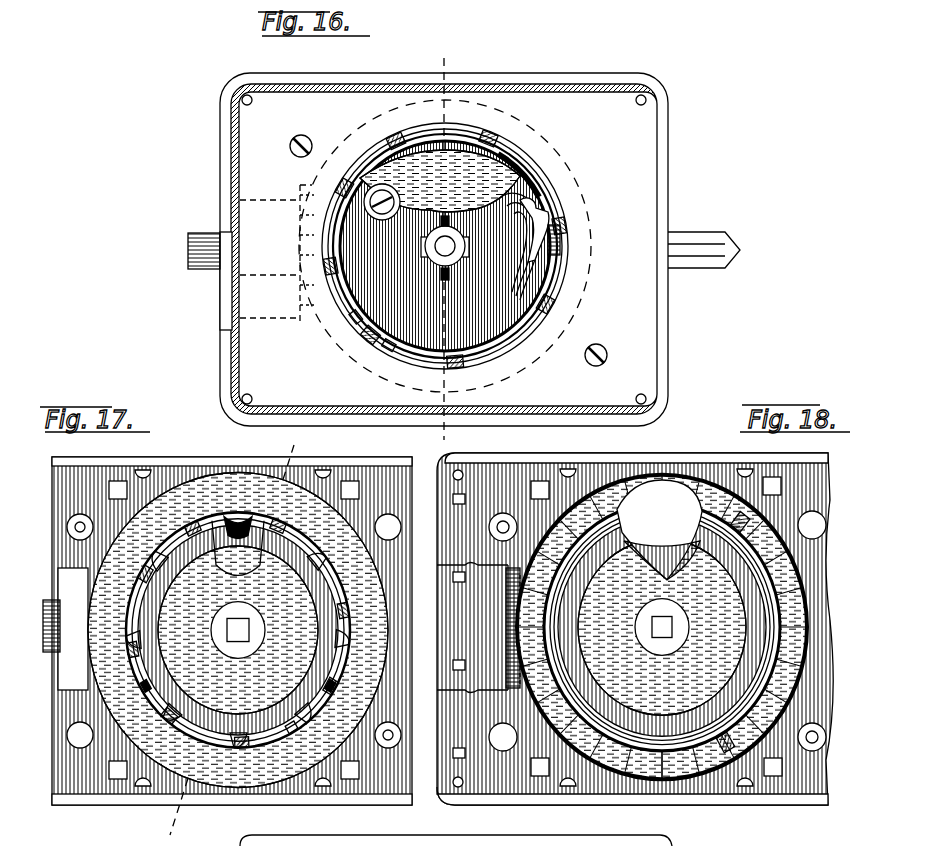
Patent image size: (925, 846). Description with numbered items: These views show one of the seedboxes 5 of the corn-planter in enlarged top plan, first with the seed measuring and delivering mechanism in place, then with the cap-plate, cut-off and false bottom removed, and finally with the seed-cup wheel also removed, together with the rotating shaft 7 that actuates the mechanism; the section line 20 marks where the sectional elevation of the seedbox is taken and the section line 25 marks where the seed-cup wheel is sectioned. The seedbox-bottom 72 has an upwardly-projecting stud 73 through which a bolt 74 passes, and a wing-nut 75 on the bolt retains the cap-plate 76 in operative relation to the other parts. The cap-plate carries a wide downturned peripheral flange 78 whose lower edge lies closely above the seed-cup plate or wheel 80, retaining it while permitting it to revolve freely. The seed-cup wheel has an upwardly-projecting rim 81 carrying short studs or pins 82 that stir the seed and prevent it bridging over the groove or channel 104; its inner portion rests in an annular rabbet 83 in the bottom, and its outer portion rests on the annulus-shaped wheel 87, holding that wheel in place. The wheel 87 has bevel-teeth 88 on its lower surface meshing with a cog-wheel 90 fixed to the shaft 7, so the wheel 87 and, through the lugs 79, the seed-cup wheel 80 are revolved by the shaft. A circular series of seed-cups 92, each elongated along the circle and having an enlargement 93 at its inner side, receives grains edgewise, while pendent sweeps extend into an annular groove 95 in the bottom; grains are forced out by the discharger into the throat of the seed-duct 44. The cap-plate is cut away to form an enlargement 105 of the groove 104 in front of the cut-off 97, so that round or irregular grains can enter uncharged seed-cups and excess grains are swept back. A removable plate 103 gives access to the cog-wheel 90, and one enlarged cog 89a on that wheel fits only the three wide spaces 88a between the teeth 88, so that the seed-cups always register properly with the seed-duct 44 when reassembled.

In FIG. 16, the seedbox 5 is at (222, 150).
In FIG. 16, the rotating shaft 7 is at (190, 251).
In FIG. 17, the rotating shaft 7 is at (50, 612).
In FIG. 16, the section line 20- 20 is at (470, 61).
In FIG. 17, the section line 25- 25 is at (262, 443).
In FIG. 18, the seed-duct 44 is at (659, 530).
In FIG. 17, the seedbox-bottom 72 is at (100, 792).
In FIG. 18, the seedbox-bottom 72 is at (728, 792).
In FIG. 16, the stud 73 is at (430, 262).
In FIG. 17, the stud 73 is at (258, 634).
In FIG. 18, the stud 73 is at (680, 632).
In FIG. 16, the bolt 74 is at (452, 262).
In FIG. 16, the wing-nut 75 is at (441, 282).
In FIG. 16, the cap-plate 76 is at (392, 300).
In FIG. 16, the peripheral flange 78 is at (380, 348).
In FIG. 18, the lugs 79 is at (742, 540).
In FIG. 16, the seed-cup plate or wheel 80 is at (362, 336).
In FIG. 17, the seed-cup plate or wheel 80 is at (202, 636).
In FIG. 16, the rim or flange 81 is at (396, 355).
In FIG. 17, the rim or flange 81 is at (298, 742).
In FIG. 16, the studs or pins 82 is at (352, 195).
In FIG. 17, the studs or pins 82 is at (336, 552).
In FIG. 18, the annular rabbet 83 is at (646, 662).
In FIG. 16, the annulus-shaped wheel 87 is at (352, 128).
In FIG. 17, the annulus-shaped wheel 87 is at (218, 490).
In FIG. 18, the annulus-shaped wheel 87 is at (790, 670).
In FIG. 18, the bevel-teeth 88 is at (770, 560).
In FIG. 18, the wide spaces 88a is at (740, 500).
In FIG. 16, the enlarged cog 89a is at (305, 242).
In FIG. 18, the enlarged cog 89a is at (508, 612).
In FIG. 16, the cog-wheel 90 is at (300, 192).
In FIG. 18, the cog-wheel 90 is at (512, 644).
In FIG. 16, the seed-cups 92 is at (555, 225).
In FIG. 17, the seed-cups 92 is at (200, 662).
In FIG. 17, the enlargement 93 is at (318, 682).
In FIG. 18, the annular groove 95 is at (740, 716).
In FIG. 16, the cut-off 97 is at (545, 200).
In FIG. 17, the removable plate 103 is at (60, 585).
In FIG. 18, the removable plate 103 is at (470, 600).
In FIG. 16, the groove or channel 104 is at (344, 290).
In FIG. 16, the enlargement 105 is at (542, 242).